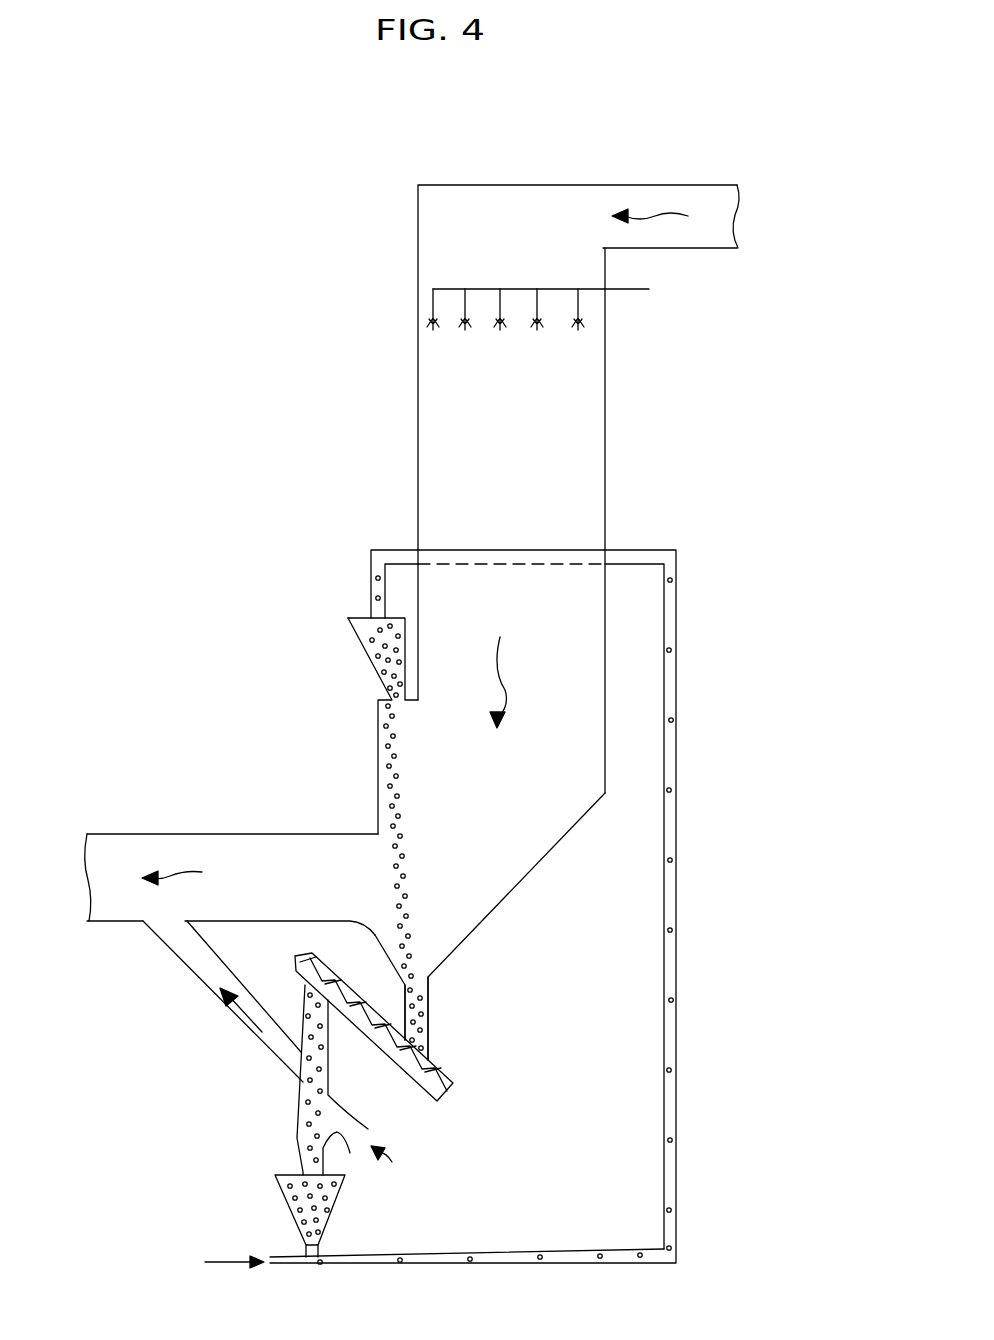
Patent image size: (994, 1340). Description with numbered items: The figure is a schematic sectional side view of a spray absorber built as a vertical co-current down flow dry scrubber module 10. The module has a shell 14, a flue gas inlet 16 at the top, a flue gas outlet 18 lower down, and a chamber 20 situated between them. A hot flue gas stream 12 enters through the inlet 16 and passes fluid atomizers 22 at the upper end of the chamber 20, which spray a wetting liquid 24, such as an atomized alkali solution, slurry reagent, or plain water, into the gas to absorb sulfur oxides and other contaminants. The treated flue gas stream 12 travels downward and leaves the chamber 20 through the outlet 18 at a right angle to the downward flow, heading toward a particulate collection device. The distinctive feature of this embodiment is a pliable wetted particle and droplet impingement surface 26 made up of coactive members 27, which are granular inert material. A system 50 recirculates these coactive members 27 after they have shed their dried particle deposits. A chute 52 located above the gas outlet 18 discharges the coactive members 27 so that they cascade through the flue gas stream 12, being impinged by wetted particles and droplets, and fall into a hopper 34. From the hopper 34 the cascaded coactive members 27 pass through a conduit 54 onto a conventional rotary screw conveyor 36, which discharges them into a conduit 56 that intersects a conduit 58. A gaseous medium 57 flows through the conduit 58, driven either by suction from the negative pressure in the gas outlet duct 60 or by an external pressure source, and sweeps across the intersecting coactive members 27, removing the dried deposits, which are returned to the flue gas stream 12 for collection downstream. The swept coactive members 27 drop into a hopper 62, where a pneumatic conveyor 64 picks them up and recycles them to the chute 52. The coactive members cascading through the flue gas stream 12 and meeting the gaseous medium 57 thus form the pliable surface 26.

The dry scrubber module 10 is at (680, 509).
The flue gas stream 12 is at (430, 615).
The shell 14 is at (413, 434).
The flue gas inlet 16 is at (694, 253).
The flue gas outlet 18 is at (370, 820).
The chamber 20 is at (518, 491).
The fluid atomizers 22 is at (516, 286).
The wetting liquid 24 is at (533, 328).
The pliable wetted particle and droplet impingement surface 26 is at (418, 859).
The coactive members 27 is at (668, 660).
The hopper 34 is at (430, 960).
The rotary screw conveyor 36 is at (458, 1103).
The system for recirculating the coactive members 50 is at (716, 831).
The chute 52 is at (362, 663).
The conduit 54 is at (433, 1010).
The conduit 56 is at (335, 1043).
The gaseous medium 57 is at (392, 1163).
The conduit 58 is at (208, 1005).
The gas outlet duct 60 is at (112, 930).
The hopper 62 is at (285, 1222).
The pneumatic conveyor 64 is at (688, 1108).